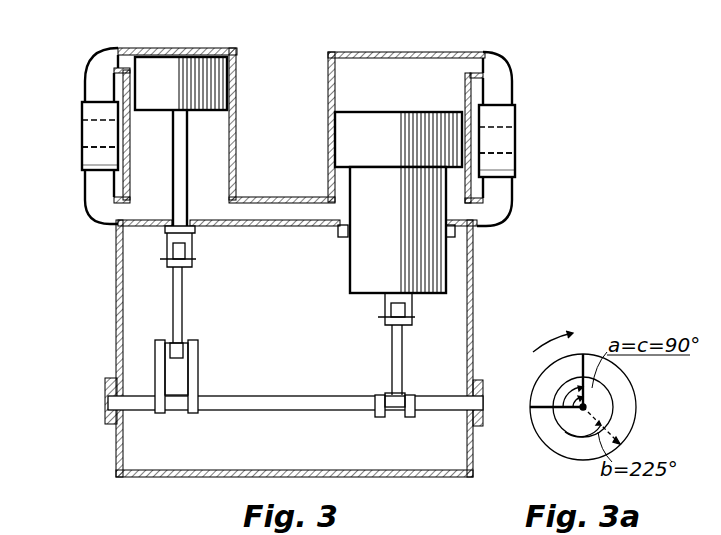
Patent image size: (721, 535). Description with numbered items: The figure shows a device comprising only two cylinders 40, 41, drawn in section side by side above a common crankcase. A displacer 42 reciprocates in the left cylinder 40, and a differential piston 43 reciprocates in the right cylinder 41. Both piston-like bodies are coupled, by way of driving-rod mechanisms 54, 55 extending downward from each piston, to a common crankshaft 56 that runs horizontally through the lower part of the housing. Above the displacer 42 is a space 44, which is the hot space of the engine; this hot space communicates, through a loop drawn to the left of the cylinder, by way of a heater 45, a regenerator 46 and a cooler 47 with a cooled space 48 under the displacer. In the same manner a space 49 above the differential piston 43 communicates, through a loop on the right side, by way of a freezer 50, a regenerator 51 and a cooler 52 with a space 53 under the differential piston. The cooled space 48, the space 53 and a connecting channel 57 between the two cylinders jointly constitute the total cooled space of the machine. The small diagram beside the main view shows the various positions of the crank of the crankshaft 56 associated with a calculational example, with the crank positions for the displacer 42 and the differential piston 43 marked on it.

In FIG. 3, the cylinder 40 is at (230, 103).
In FIG. 3, the cylinder 41 is at (328, 108).
In FIG. 3, the displacer 42 is at (216, 56).
In FIG. 3A, the displacer 42 is at (567, 369).
In FIG. 3, the differential piston 43 is at (443, 117).
In FIG. 3A, the differential piston 43 is at (540, 405).
In FIG. 3, the space 44 is at (180, 52).
In FIG. 3, the heater 45 is at (88, 110).
In FIG. 3, the regenerator 46 is at (88, 132).
In FIG. 3, the cooler 47 is at (88, 162).
In FIG. 3, the cooled space 48 is at (147, 200).
In FIG. 3, the space 49 is at (428, 65).
In FIG. 3, the freezer 50 is at (510, 115).
In FIG. 3, the regenerator 51 is at (507, 140).
In FIG. 3, the cooler 52 is at (507, 167).
In FIG. 3, the space 53 is at (457, 187).
In FIG. 3, the driving-rod mechanism 54 is at (177, 289).
In FIG. 3, the driving-rod mechanism 55 is at (402, 348).
In FIG. 3, the crankshaft 56 is at (325, 408).
In FIG. 3, the connecting channel 57 is at (282, 198).